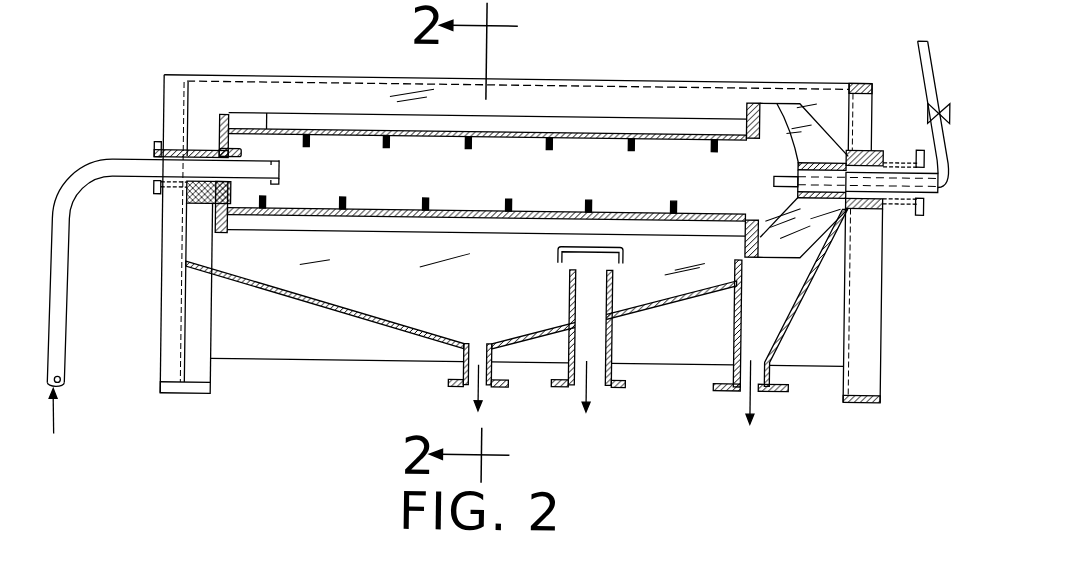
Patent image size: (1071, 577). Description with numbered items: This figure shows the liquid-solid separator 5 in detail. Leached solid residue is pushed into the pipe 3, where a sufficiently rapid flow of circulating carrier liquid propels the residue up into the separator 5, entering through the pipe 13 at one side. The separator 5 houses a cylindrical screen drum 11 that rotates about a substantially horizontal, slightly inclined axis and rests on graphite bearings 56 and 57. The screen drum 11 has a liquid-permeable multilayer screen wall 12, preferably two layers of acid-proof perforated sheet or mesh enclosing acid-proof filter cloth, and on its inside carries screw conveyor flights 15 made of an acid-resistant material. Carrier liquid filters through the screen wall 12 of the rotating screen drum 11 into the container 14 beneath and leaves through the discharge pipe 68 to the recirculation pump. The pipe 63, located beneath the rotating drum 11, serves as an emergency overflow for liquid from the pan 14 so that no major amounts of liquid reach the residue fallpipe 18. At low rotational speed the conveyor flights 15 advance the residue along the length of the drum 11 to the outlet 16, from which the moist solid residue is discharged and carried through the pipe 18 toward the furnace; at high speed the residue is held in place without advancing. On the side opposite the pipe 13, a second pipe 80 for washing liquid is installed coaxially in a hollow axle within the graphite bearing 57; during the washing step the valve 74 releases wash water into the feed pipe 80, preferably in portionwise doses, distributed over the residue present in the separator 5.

The pipe 3 is at (66, 312).
The separator 5 is at (569, 72).
The screen drum 11 is at (449, 178).
The multilayer screen wall 12 is at (375, 220).
The pipe 13 is at (280, 185).
The container 14 is at (350, 318).
The conveyor flights 15 is at (588, 206).
The outlet 16 is at (758, 157).
The pipe 18 is at (765, 385).
The graphite bearing 56 is at (186, 200).
The graphite bearing 57 is at (862, 208).
The pipe 63 is at (595, 375).
The discharge pipe 68 is at (470, 375).
The valve 74 is at (930, 110).
The pipe 80 is at (940, 160).